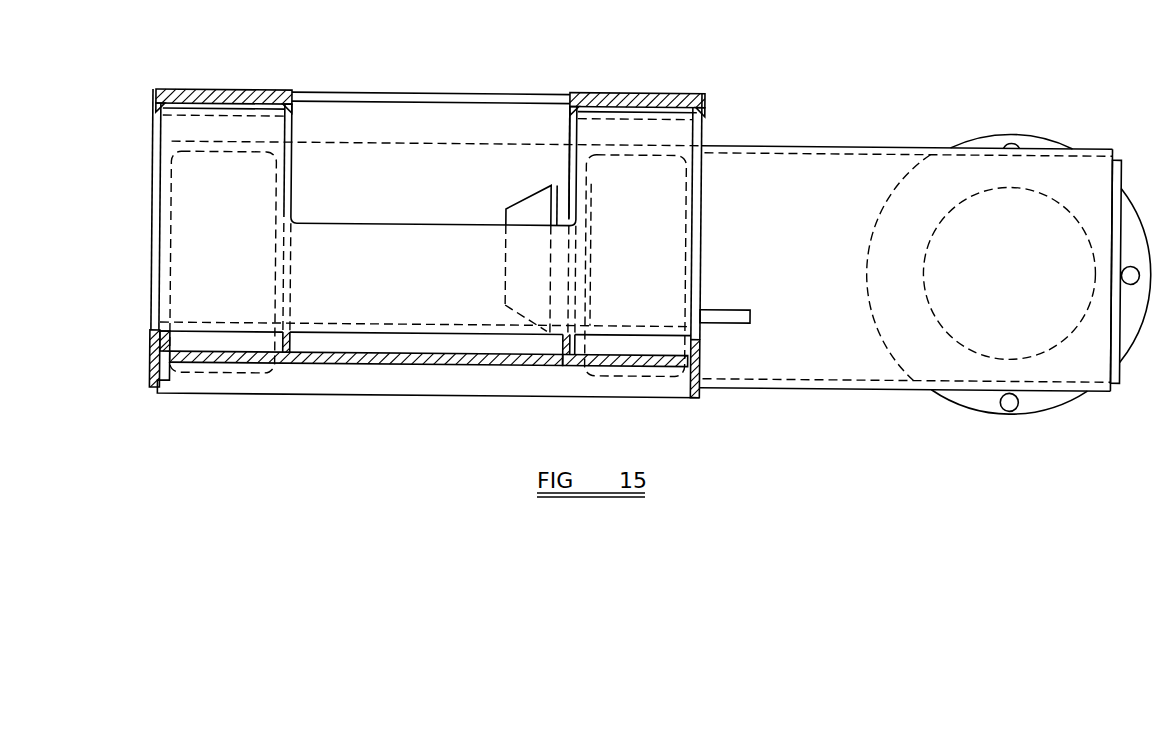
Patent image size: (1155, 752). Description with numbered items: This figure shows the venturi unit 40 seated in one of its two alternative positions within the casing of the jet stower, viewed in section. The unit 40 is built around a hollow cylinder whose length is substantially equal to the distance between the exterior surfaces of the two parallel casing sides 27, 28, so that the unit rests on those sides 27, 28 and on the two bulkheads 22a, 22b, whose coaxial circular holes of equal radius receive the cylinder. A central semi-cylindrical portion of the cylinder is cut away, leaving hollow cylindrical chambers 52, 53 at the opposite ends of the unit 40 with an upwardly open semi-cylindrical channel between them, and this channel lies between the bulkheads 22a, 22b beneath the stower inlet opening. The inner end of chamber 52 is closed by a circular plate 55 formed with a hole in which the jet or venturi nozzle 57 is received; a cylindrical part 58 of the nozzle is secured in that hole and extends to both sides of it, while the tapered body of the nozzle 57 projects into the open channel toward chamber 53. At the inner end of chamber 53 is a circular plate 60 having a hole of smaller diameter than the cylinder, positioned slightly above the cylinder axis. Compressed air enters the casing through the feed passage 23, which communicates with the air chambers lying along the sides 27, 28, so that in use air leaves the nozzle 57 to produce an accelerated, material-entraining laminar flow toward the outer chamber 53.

The bulkhead 22a is at (293, 334).
The bulkhead 22b is at (565, 342).
The compressed air feed passage 23 is at (855, 362).
The side of the casing 27 is at (153, 349).
The side of the casing 28 is at (702, 348).
The venturi unit 40 is at (394, 292).
The hollow cylindrical chamber 52 is at (668, 174).
The outer chamber 53 is at (192, 196).
The circular plate 55 is at (580, 148).
The jet or venturi nozzle 57 is at (518, 202).
The cylindrical part of the nozzle 58 is at (558, 181).
The circular plate 60 is at (297, 126).